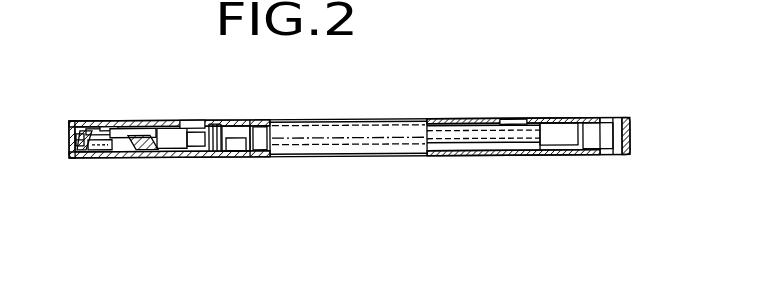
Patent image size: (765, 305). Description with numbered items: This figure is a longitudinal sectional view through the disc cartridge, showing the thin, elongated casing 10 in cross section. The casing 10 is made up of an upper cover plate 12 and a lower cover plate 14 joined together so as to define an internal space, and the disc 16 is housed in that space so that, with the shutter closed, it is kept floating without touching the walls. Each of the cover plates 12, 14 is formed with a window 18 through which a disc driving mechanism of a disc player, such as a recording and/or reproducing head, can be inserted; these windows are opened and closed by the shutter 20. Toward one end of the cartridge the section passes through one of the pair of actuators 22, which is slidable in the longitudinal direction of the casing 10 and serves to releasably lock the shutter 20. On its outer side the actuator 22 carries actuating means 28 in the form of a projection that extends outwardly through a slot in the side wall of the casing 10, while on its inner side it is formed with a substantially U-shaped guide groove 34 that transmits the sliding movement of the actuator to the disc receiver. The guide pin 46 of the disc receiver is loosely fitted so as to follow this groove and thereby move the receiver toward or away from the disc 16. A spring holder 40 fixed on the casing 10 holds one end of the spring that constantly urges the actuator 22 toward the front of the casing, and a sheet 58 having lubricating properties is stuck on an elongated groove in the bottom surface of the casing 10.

The casing 10 is at (642, 104).
The upper cover plate 12 is at (182, 122).
The lower cover plate 14 is at (171, 158).
The disc 16 is at (384, 150).
The window 18 is at (358, 124).
The shutter 20 is at (410, 121).
The actuator 22 is at (139, 150).
The actuating means 28 is at (68, 139).
The guide groove 34 is at (110, 124).
The spring holder 40 is at (222, 124).
The guide pin 46 is at (140, 126).
The sheet 58 is at (517, 122).